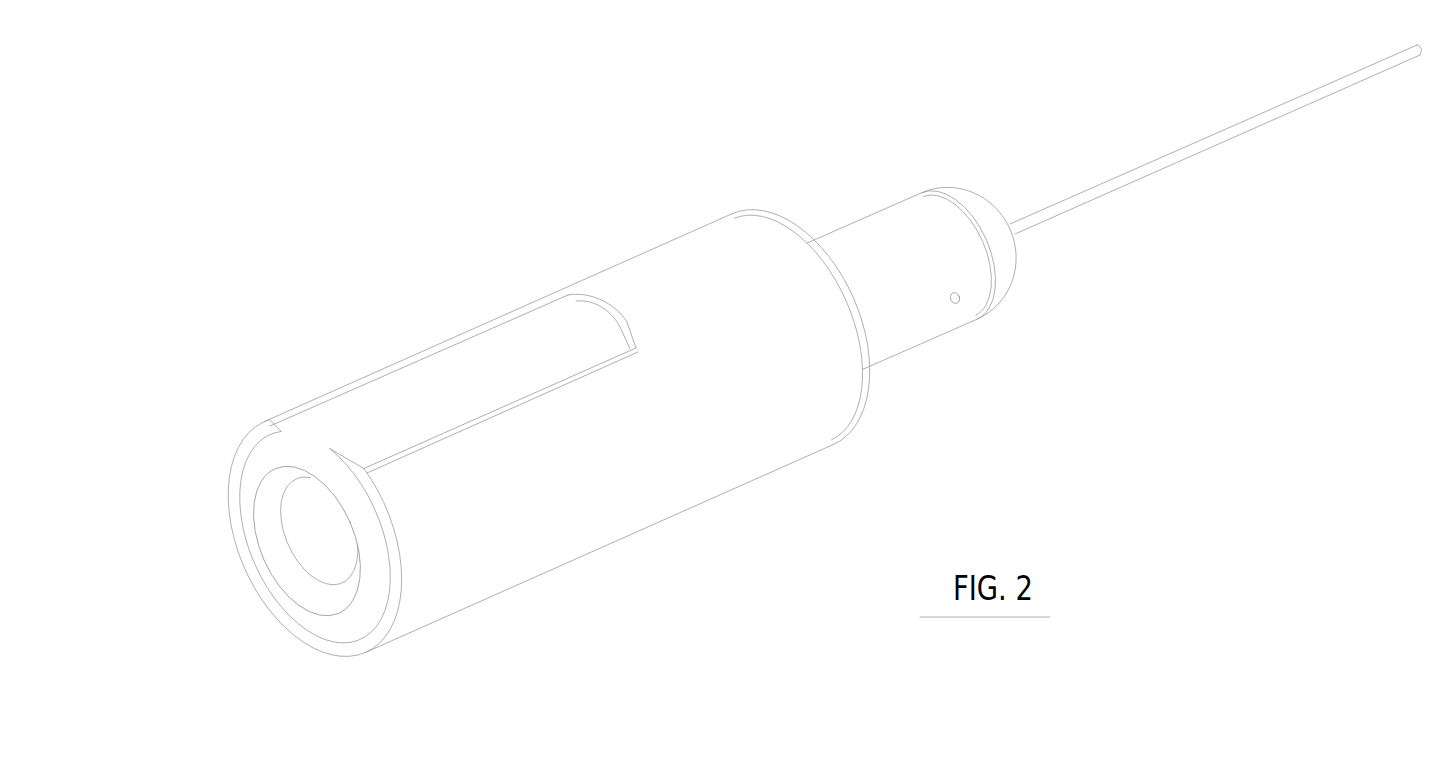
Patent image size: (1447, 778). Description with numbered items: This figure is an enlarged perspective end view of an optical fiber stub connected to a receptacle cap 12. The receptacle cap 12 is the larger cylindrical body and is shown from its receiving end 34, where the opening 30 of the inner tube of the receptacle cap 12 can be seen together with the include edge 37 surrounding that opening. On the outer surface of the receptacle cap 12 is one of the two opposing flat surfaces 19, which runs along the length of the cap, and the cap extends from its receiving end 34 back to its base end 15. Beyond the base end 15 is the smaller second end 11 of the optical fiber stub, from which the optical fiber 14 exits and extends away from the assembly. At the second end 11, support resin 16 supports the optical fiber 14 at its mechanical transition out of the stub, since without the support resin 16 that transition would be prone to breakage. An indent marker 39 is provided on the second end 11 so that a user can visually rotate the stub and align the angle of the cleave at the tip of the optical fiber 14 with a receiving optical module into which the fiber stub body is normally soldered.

The second end 11 is at (888, 253).
The receptacle cap 12 is at (567, 505).
The optical fiber 14 is at (1278, 113).
The base end 15 is at (692, 278).
The support resin 16 is at (1005, 255).
The flat surface 19 is at (435, 383).
The opening 30 is at (318, 527).
The receiving end 34 is at (432, 557).
The include edge 37 is at (315, 597).
The indent marker 39 is at (960, 305).